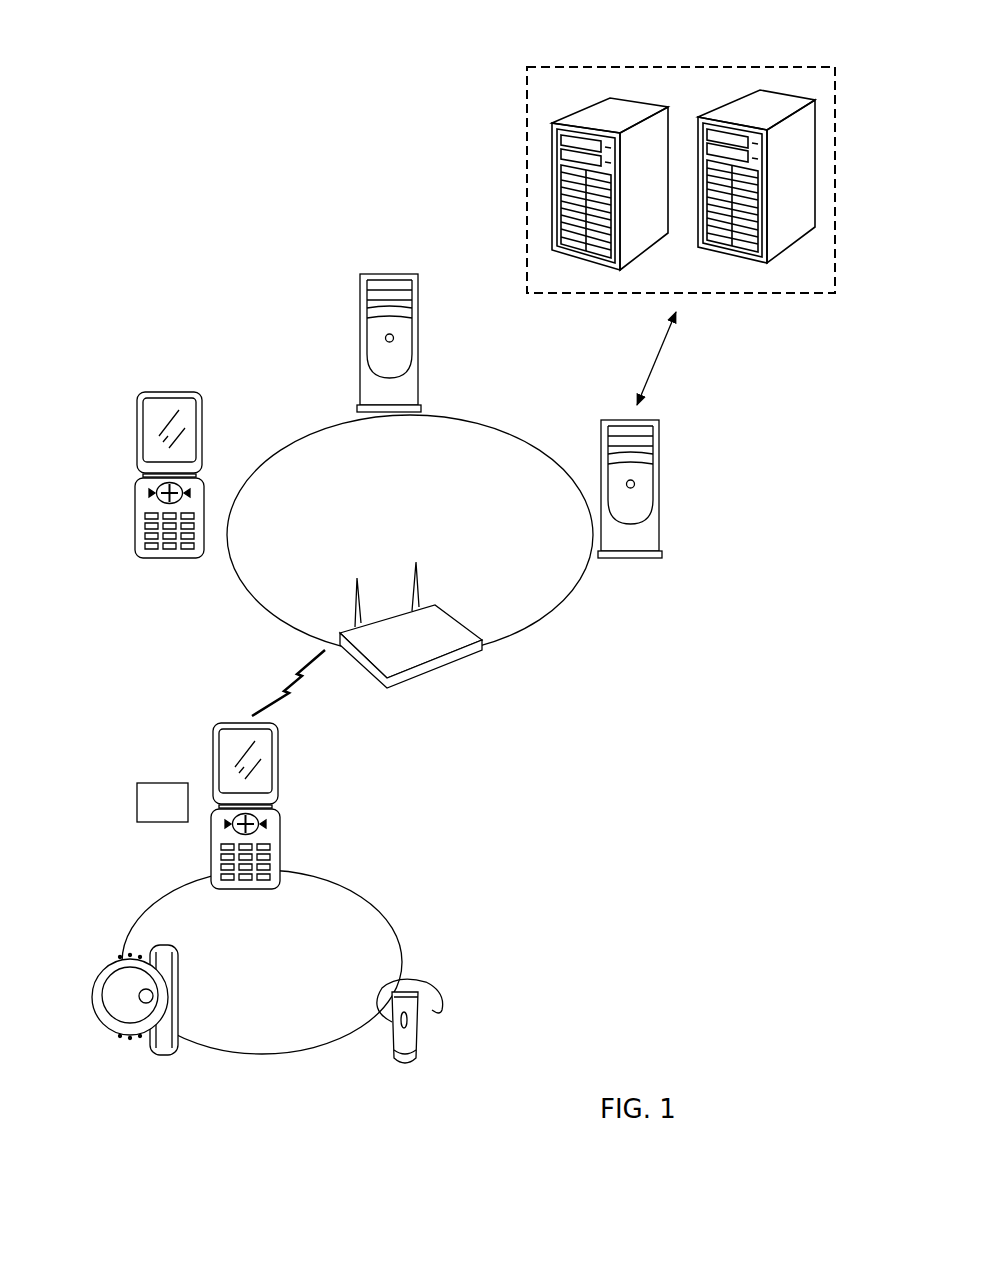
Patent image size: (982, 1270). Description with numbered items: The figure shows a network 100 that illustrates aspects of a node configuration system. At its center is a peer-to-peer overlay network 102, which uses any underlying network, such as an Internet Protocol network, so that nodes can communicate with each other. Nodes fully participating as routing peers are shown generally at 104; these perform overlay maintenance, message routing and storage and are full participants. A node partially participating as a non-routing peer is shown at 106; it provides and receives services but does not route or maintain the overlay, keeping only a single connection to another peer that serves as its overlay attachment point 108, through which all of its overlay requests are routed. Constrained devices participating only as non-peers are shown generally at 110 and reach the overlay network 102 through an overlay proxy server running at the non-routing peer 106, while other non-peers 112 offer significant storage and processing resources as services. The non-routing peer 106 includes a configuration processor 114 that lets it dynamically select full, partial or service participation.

The network 100 is at (194, 190).
The peer-to-peer overlay network 102 is at (238, 580).
The routing peers 104 is at (333, 343).
The non-routing peer 106 is at (212, 727).
The overlay attachment point 108 is at (460, 662).
The non-peers 110 is at (376, 1053).
The non-peers 112 is at (537, 66).
The configuration processor 114 is at (160, 783).